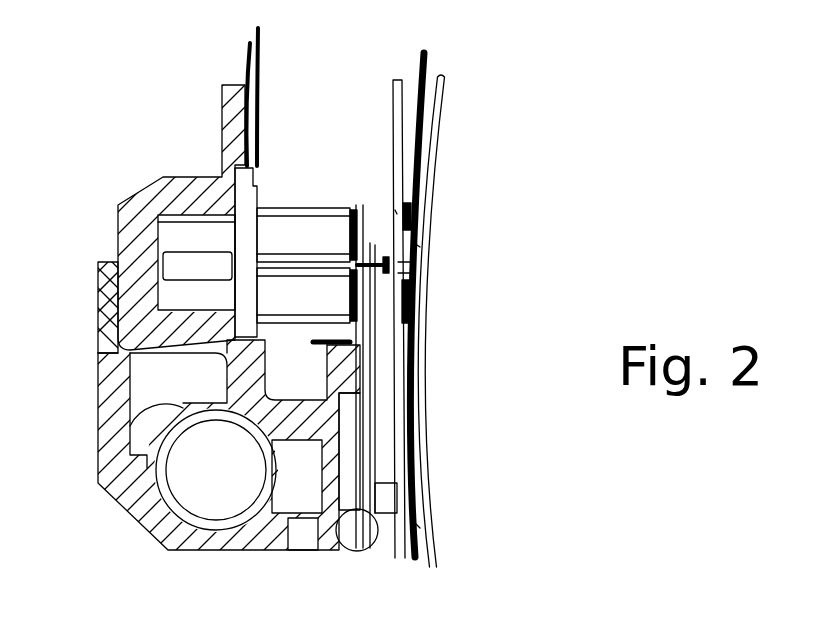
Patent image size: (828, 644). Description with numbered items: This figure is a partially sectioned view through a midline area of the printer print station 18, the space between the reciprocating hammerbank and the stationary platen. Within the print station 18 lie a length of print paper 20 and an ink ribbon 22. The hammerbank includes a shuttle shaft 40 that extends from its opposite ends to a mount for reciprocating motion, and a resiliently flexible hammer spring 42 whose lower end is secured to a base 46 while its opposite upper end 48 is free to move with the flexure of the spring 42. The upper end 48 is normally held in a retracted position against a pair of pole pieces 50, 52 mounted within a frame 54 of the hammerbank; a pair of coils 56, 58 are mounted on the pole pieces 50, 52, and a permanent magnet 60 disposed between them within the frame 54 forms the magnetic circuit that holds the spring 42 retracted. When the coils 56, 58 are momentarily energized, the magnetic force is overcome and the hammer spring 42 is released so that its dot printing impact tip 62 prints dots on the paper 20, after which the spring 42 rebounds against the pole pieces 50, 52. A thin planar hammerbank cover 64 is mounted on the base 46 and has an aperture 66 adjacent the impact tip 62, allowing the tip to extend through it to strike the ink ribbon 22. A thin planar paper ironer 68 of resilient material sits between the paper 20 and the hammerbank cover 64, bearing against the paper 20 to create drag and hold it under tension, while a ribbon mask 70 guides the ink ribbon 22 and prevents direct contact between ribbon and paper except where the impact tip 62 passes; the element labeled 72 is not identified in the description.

The print station 18 is at (400, 267).
The print paper 20 is at (443, 92).
The ink ribbon 22 is at (397, 212).
The shuttle shaft 40 is at (130, 402).
The hammer spring 42 is at (370, 382).
The base 46 is at (372, 548).
The upper end 48 is at (383, 255).
The pole piece 50 is at (190, 232).
The pole piece 52 is at (173, 292).
The frame 54 is at (118, 240).
The coil 56 is at (307, 235).
The coil 58 is at (307, 295).
The permanent magnet 60 is at (172, 265).
The dot printing impact tip 62 is at (410, 240).
The hammerbank cover 64 is at (400, 80).
The aperture 66 is at (412, 290).
The paper ironer 68 is at (418, 525).
The ribbon mask 70 is at (428, 60).
The connector 72 is at (420, 245).